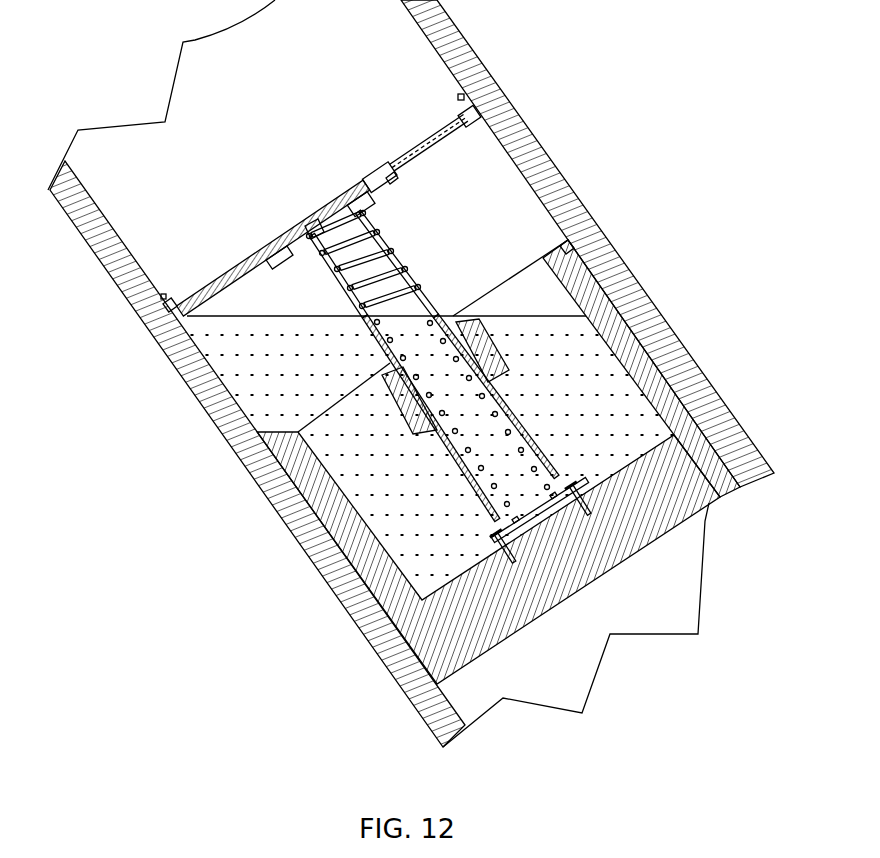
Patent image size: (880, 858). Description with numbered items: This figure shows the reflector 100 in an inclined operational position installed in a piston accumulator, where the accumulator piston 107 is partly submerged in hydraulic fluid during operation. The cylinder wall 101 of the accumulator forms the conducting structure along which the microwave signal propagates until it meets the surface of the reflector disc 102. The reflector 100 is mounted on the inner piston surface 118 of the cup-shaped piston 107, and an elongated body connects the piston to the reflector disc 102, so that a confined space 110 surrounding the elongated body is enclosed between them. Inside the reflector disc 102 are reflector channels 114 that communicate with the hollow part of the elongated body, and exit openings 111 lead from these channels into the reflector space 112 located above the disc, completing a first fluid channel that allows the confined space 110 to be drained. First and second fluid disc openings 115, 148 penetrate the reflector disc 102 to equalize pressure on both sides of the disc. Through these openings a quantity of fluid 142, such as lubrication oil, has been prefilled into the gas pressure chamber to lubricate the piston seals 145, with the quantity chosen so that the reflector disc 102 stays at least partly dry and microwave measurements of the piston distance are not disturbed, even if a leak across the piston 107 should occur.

The reflector 100 is at (367, 313).
The cylinder wall 101 is at (490, 72).
The reflector disc 102 is at (412, 143).
The accumulator piston 107 is at (683, 493).
The confined space 110 is at (421, 257).
The exit opening 111 is at (457, 110).
The reflector space 112 is at (263, 167).
The reflector channel 114 is at (387, 163).
The first fluid disc opening 115 is at (230, 270).
The inner piston surface 118 is at (668, 390).
The fluid 142 is at (253, 362).
The piston seal 145 is at (570, 240).
The second fluid disc opening 148 is at (182, 306).